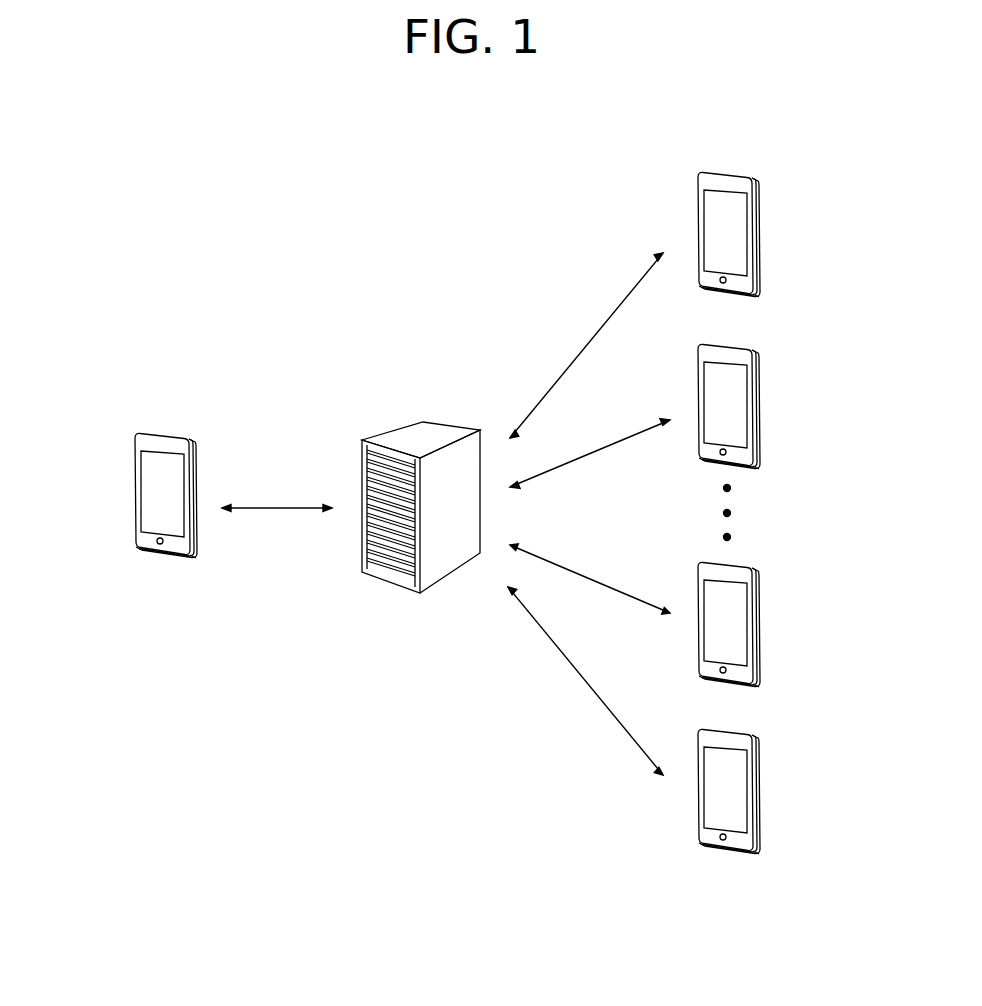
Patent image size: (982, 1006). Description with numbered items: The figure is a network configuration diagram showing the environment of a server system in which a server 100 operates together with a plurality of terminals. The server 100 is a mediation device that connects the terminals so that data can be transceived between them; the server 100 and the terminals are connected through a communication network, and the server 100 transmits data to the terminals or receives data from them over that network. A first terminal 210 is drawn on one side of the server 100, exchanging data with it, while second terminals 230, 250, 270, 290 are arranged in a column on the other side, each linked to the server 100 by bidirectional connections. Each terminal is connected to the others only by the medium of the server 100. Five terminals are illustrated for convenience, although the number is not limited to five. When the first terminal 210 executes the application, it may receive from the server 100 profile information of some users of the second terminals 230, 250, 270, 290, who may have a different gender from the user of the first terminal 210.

The server 100 is at (412, 423).
The first terminal 210 is at (137, 500).
The second terminal 230 is at (758, 234).
The second terminal 250 is at (758, 398).
The second terminal 270 is at (758, 620).
The second terminal 290 is at (758, 782).